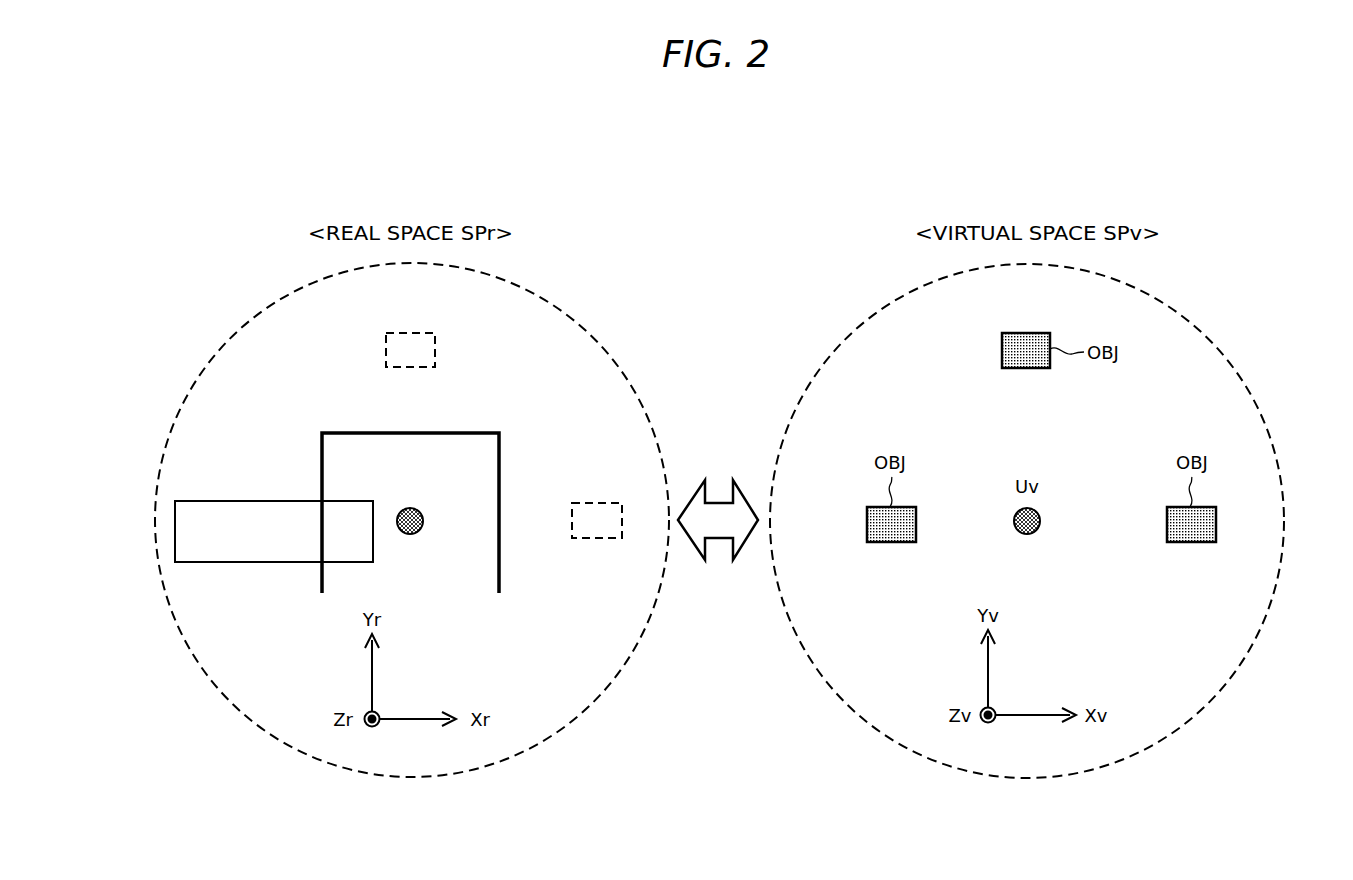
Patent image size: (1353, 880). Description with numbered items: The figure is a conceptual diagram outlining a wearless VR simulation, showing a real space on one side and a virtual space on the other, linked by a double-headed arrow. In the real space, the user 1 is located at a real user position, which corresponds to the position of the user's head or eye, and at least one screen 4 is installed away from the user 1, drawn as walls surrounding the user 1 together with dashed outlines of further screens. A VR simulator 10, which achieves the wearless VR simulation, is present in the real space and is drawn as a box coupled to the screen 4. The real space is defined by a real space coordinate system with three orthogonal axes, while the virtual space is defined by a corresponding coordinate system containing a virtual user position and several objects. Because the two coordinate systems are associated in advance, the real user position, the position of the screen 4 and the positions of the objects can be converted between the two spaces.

The user 1 is at (410, 535).
The screen 4 is at (465, 432).
The VR simulator 10 is at (263, 562).